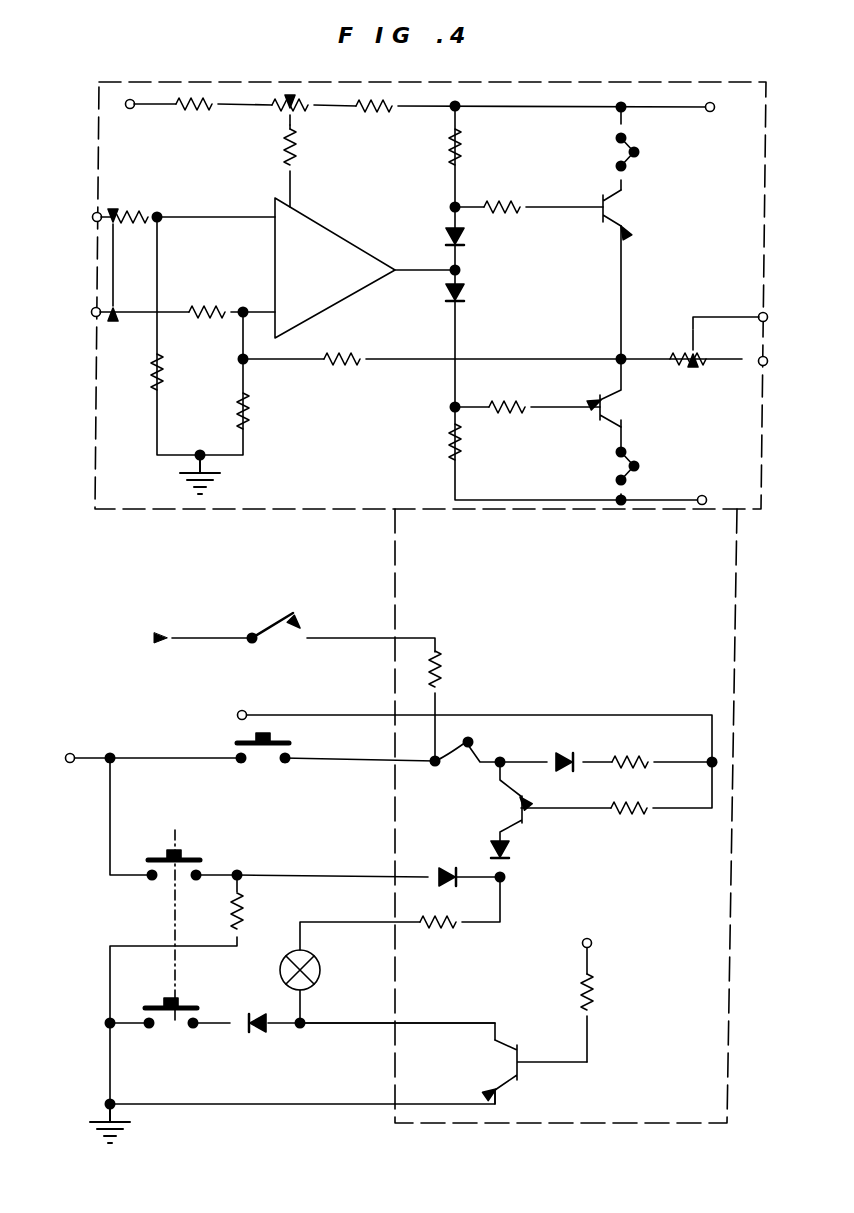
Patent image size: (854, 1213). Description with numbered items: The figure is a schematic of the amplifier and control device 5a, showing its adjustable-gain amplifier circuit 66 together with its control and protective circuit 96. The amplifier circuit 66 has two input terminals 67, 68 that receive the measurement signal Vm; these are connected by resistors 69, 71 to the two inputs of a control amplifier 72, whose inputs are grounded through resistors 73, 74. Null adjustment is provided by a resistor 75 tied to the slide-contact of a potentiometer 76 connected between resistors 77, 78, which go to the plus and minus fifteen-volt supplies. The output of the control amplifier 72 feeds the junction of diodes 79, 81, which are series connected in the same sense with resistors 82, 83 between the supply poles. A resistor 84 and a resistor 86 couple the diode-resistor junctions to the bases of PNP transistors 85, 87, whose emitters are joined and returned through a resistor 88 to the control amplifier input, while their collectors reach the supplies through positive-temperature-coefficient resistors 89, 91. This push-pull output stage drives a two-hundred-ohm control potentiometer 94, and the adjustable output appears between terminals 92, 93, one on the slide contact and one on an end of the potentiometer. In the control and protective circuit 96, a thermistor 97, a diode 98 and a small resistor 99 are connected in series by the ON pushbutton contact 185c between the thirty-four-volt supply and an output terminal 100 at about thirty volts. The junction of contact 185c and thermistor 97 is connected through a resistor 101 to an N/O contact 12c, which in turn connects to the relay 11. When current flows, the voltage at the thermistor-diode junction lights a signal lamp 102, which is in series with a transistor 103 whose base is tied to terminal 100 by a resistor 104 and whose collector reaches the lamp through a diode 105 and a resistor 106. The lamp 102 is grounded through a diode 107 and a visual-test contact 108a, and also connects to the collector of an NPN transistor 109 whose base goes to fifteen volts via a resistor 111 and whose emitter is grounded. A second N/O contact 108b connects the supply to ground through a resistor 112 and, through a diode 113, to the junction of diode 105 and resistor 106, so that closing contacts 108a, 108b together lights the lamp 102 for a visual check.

The amplifier and control device 5a is at (642, 86).
The adjustable-gain amplifier circuit 66 is at (387, 430).
The input terminal 67 is at (100, 212).
The input terminal 68 is at (100, 316).
The resistor 69 is at (142, 212).
The resistor 71 is at (208, 308).
The control amplifier 72 is at (356, 243).
The resistor 73 is at (168, 372).
The resistor 74 is at (252, 420).
The resistor 75 is at (296, 155).
The potentiometer 76 is at (284, 110).
The resistor 77 is at (384, 114).
The resistor 78 is at (196, 122).
The diode 79 is at (474, 244).
The diode 81 is at (476, 295).
The resistor 82 is at (462, 152).
The resistor 83 is at (462, 447).
The resistor 84 is at (502, 202).
The PNP transistor 85 is at (600, 203).
The resistor 86 is at (514, 392).
The PNP transistor 87 is at (604, 402).
The resistor 88 is at (354, 352).
The positive-temperature-coefficient resistor 89 is at (643, 153).
The positive-temperature-coefficient resistor 91 is at (631, 462).
The output terminal 92 is at (757, 316).
The output terminal 93 is at (760, 366).
The control potentiometer 94 is at (686, 368).
The control and protective circuit 96 is at (587, 633).
The thermistor 97 is at (478, 766).
The diode 98 is at (564, 760).
The resistor 99 is at (645, 748).
The output terminal 100 is at (242, 711).
The resistor 101 is at (441, 676).
The signal lamp 102 is at (314, 958).
The transistor 103 is at (526, 816).
The resistor 104 is at (640, 812).
The diode 105 is at (515, 848).
The resistor 106 is at (435, 931).
The diode 107 is at (256, 1036).
The contact 108a is at (164, 1032).
The N/O contact 108b is at (183, 854).
The NPN transistor 109 is at (507, 1064).
The resistor 111 is at (590, 1006).
The resistor 112 is at (242, 918).
The diode 113 is at (452, 866).
The relay 11 is at (203, 625).
The N/O contact 12c is at (334, 623).
The pushbutton contact 185c is at (238, 754).